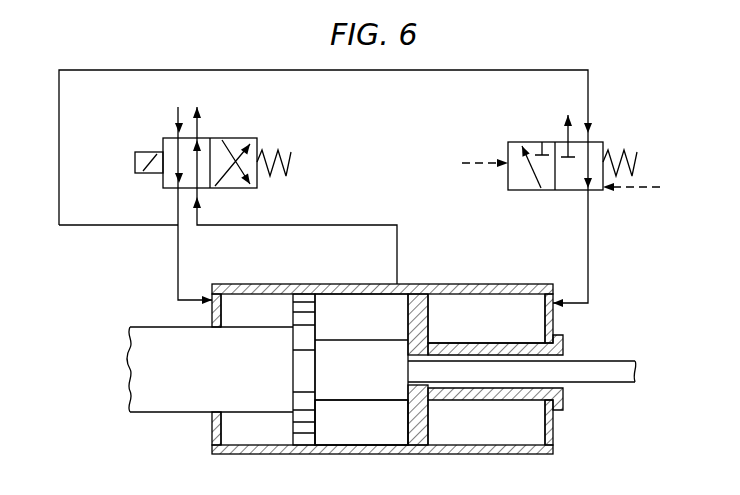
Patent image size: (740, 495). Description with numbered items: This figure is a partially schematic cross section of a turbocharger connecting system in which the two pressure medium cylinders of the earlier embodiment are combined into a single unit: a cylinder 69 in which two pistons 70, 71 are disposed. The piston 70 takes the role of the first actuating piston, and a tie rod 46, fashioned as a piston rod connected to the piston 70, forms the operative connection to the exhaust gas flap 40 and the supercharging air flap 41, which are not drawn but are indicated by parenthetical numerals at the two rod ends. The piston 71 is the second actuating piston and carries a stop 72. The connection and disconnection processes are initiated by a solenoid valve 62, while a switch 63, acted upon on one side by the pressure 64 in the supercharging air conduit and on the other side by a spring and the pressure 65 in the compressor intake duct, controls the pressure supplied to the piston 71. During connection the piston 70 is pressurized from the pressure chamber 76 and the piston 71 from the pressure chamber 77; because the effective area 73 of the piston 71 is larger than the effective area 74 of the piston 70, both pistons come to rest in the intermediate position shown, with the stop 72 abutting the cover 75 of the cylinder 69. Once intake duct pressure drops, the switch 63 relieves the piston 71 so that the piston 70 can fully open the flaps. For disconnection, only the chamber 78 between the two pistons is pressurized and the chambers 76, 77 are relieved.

The exhaust gas flap 40 is at (128, 369).
The supercharging air flap 41 is at (560, 374).
The tie rod 46 is at (367, 386).
The solenoid valve 62 is at (229, 130).
The switch 63 is at (532, 127).
The pressure in the supercharging air conduit 64 is at (483, 164).
The pressure in the intake duct 65 is at (660, 188).
The cylinder 69 is at (276, 289).
The piston 70 is at (304, 321).
The piston 71 is at (423, 320).
The stop 72 is at (563, 345).
The effective area 73 is at (437, 415).
The effective area 74 is at (290, 424).
The cover 75 is at (560, 436).
The pressure chamber 76 is at (270, 323).
The pressure chamber 77 is at (533, 329).
The chamber 78 is at (362, 443).